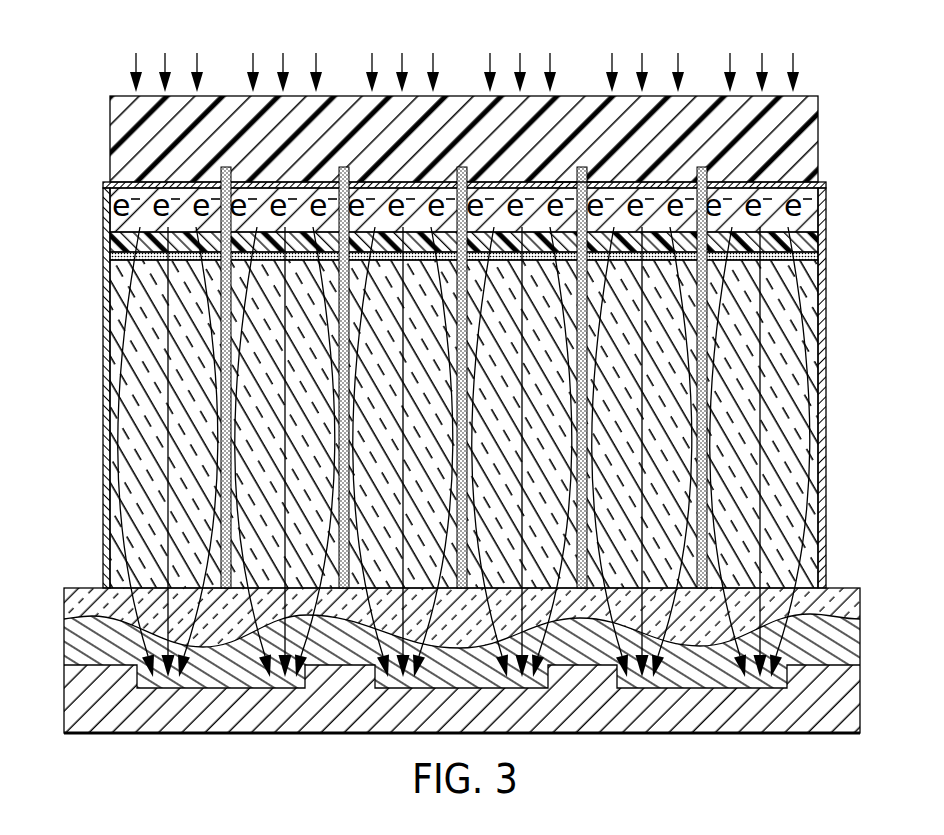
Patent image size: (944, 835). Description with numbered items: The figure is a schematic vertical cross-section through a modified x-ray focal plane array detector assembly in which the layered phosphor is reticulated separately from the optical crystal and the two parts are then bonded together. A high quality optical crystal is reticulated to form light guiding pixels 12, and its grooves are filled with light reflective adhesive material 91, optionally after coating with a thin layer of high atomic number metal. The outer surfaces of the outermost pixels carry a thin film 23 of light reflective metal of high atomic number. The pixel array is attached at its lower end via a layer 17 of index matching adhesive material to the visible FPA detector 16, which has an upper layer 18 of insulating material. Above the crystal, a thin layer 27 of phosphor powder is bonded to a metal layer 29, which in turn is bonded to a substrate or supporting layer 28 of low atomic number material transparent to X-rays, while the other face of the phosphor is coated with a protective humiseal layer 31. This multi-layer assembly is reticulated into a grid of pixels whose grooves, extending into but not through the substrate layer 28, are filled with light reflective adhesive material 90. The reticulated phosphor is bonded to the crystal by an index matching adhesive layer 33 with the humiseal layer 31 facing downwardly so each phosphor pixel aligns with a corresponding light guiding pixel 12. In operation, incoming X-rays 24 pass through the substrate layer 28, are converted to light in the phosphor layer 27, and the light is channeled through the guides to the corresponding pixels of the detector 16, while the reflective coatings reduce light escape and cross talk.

The light guiding pixels 12 is at (797, 495).
The visible FPA detector 16 is at (85, 723).
The layer of index matching adhesive material 17 is at (83, 593).
The upper layer of insulating material 18 is at (72, 638).
The thin film of light reflective metal of high atomic number 23 is at (102, 402).
The incoming X-rays 24 is at (254, 62).
The thin layer of phosphor powder 27 is at (798, 227).
The substrate or supporting layer 28 is at (793, 126).
The metal layer 29 is at (797, 181).
The protective humiseal layer 31 is at (802, 240).
The index matching adhesive layer 33 is at (813, 261).
The light reflective adhesive material 90 is at (572, 186).
The light reflective adhesive material 91 is at (585, 423).